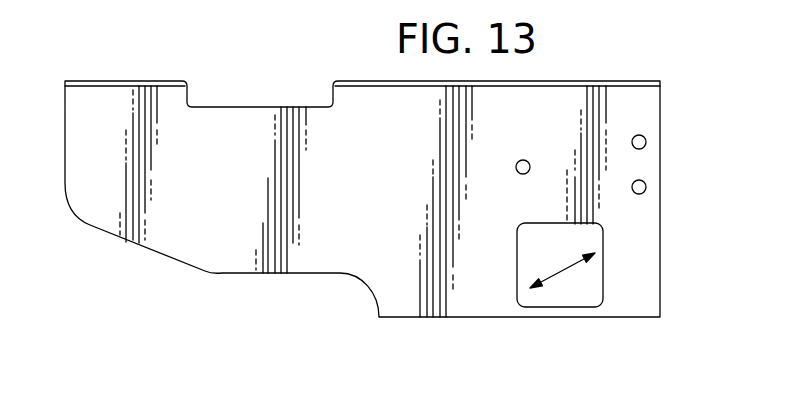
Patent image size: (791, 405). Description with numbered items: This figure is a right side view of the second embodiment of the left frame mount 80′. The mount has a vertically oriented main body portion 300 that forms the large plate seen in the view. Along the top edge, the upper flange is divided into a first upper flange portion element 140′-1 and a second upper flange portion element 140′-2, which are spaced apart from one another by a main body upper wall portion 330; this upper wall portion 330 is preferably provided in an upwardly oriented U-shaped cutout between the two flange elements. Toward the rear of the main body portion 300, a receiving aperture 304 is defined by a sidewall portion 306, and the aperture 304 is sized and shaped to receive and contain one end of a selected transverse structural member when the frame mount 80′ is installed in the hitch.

The first frame mount 80′ is at (678, 158).
The first upper flange portion element 140′-1 is at (553, 82).
The second upper flange portion element 140′-2 is at (137, 83).
The main body portion 300 is at (372, 208).
The receiving aperture 304 is at (562, 268).
The sidewall portion 306 is at (552, 308).
The main body upper wall portion 330 is at (280, 107).